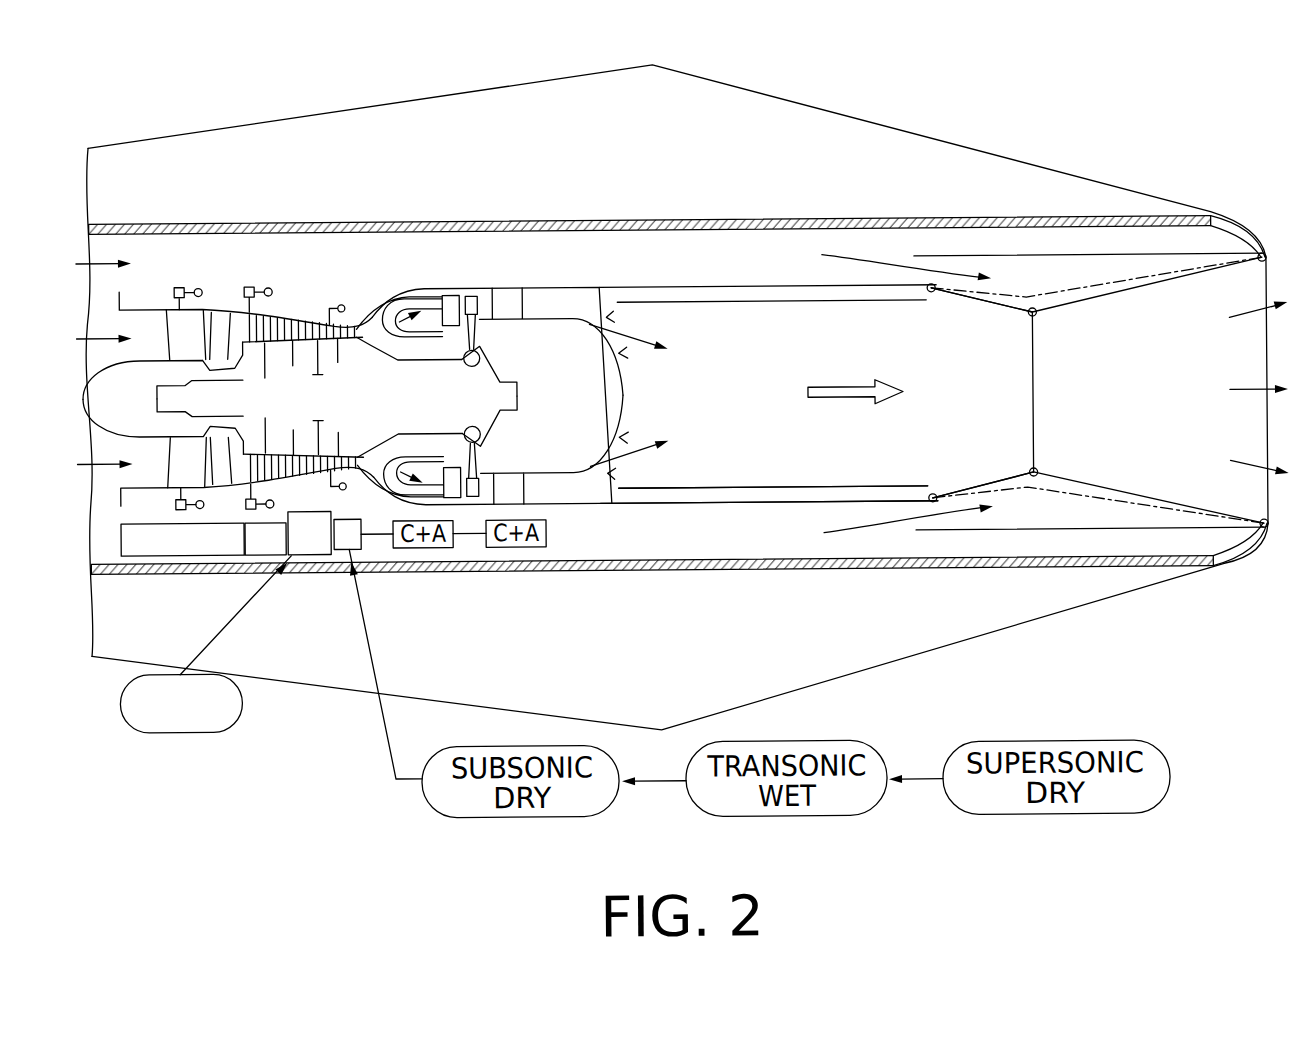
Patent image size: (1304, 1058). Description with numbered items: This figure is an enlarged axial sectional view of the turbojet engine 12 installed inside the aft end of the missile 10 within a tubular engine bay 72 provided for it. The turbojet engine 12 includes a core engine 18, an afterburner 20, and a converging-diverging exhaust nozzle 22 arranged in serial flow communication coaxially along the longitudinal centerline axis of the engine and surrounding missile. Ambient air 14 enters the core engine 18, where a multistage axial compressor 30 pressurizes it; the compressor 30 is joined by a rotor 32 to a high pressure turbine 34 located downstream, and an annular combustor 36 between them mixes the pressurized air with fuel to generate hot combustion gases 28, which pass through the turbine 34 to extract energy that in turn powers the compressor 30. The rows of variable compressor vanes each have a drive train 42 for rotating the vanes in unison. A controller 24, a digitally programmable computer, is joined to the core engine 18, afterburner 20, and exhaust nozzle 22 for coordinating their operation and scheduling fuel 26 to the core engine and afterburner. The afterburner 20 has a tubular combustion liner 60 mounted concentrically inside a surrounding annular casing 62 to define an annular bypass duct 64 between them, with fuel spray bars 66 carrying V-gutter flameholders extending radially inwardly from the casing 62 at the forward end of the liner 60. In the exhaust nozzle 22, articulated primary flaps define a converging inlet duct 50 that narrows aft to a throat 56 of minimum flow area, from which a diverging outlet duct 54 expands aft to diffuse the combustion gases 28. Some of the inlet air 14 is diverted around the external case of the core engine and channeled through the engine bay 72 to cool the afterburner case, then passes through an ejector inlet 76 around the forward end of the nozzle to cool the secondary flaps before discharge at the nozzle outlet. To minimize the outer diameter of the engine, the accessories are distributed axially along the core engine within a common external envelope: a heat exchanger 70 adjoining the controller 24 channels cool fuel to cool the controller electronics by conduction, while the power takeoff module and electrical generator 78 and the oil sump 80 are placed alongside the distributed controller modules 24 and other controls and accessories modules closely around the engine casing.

The missile 10 is at (198, 125).
The turbojet engine 12 is at (572, 254).
The ambient air 14 is at (90, 342).
The core engine 18 is at (372, 298).
The afterburner 20 is at (648, 284).
The exhaust nozzle 22 is at (1048, 256).
The controller 24 is at (357, 566).
The fuel 26 is at (178, 730).
The hot combustion gases 28 is at (408, 310).
The multistage axial compressor 30 is at (297, 322).
The rotor 32 is at (427, 362).
The high pressure turbine 34 is at (478, 292).
The annular combustor 36 is at (397, 364).
The drive train 42 is at (188, 288).
The converging inlet duct 50 is at (940, 413).
The diverging outlet duct 54 is at (1142, 407).
The throat 56 is at (1037, 378).
The combustion liner 60 is at (703, 483).
The afterburner casing 62 is at (703, 507).
The bypass duct 64 is at (803, 493).
The fuel spray bars 66 is at (632, 436).
The heat exchanger 70 is at (307, 552).
The engine bay 72 is at (1045, 553).
The ejector inlet 76 is at (920, 528).
The power takeoff module and electrical generator 78 is at (120, 533).
The oil sump 80 is at (250, 567).